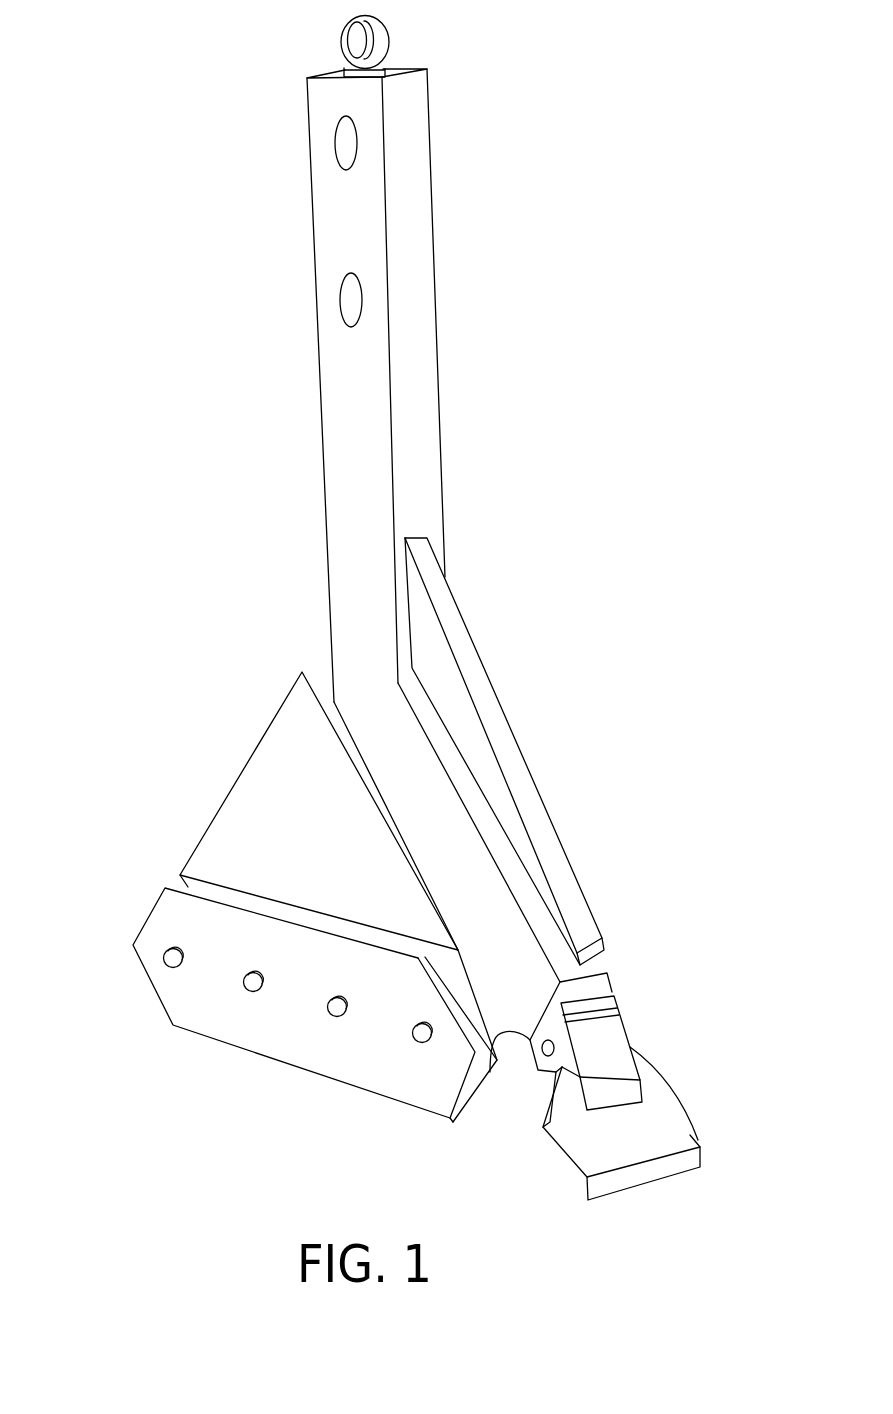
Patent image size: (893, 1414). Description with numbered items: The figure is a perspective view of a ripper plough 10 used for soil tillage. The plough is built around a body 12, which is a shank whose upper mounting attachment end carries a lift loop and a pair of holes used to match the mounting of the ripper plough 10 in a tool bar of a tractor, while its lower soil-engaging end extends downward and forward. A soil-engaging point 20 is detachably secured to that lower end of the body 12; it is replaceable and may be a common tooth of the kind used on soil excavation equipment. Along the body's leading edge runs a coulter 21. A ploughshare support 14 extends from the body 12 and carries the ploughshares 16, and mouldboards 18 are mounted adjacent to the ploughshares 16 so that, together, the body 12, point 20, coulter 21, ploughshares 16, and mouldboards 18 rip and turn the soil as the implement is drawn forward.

The ripper plough 10 is at (215, 157).
The body 12 is at (312, 265).
The ploughshare support 14 is at (490, 1072).
The ploughshares 16 is at (163, 920).
The mouldboards 18 is at (273, 783).
The soil-engaging point 20 is at (677, 1087).
The coulter 21 is at (548, 810).